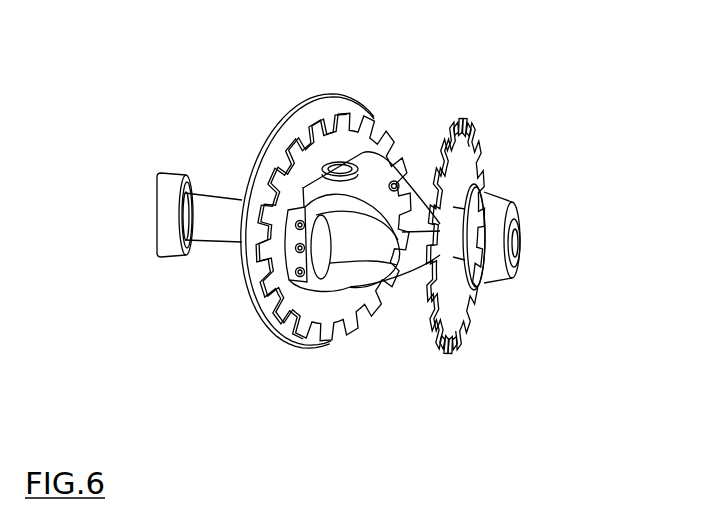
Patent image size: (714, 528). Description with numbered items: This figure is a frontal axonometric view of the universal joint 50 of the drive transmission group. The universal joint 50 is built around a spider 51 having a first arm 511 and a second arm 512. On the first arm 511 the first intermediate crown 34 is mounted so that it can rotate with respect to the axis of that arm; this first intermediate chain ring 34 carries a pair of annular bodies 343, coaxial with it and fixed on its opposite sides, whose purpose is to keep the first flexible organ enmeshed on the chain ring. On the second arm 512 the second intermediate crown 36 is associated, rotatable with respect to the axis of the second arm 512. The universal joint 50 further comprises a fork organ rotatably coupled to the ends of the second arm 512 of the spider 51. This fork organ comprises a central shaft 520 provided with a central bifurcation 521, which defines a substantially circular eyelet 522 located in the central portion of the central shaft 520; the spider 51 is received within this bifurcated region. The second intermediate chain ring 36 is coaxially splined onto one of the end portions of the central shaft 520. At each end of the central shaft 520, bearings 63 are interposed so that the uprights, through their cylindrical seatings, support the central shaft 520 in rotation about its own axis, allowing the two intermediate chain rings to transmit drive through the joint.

The universal joint 50 is at (243, 397).
The first intermediate crown 34 is at (337, 128).
The annular bodies 343 is at (293, 117).
The second intermediate crown 36 is at (486, 147).
The spider 51 is at (343, 228).
The first arm 511 is at (333, 287).
The second arm 512 is at (352, 158).
The central shaft 520 is at (210, 192).
The central bifurcation 521 is at (395, 257).
The eyelet 522 is at (382, 237).
The bearings 63 is at (153, 200).